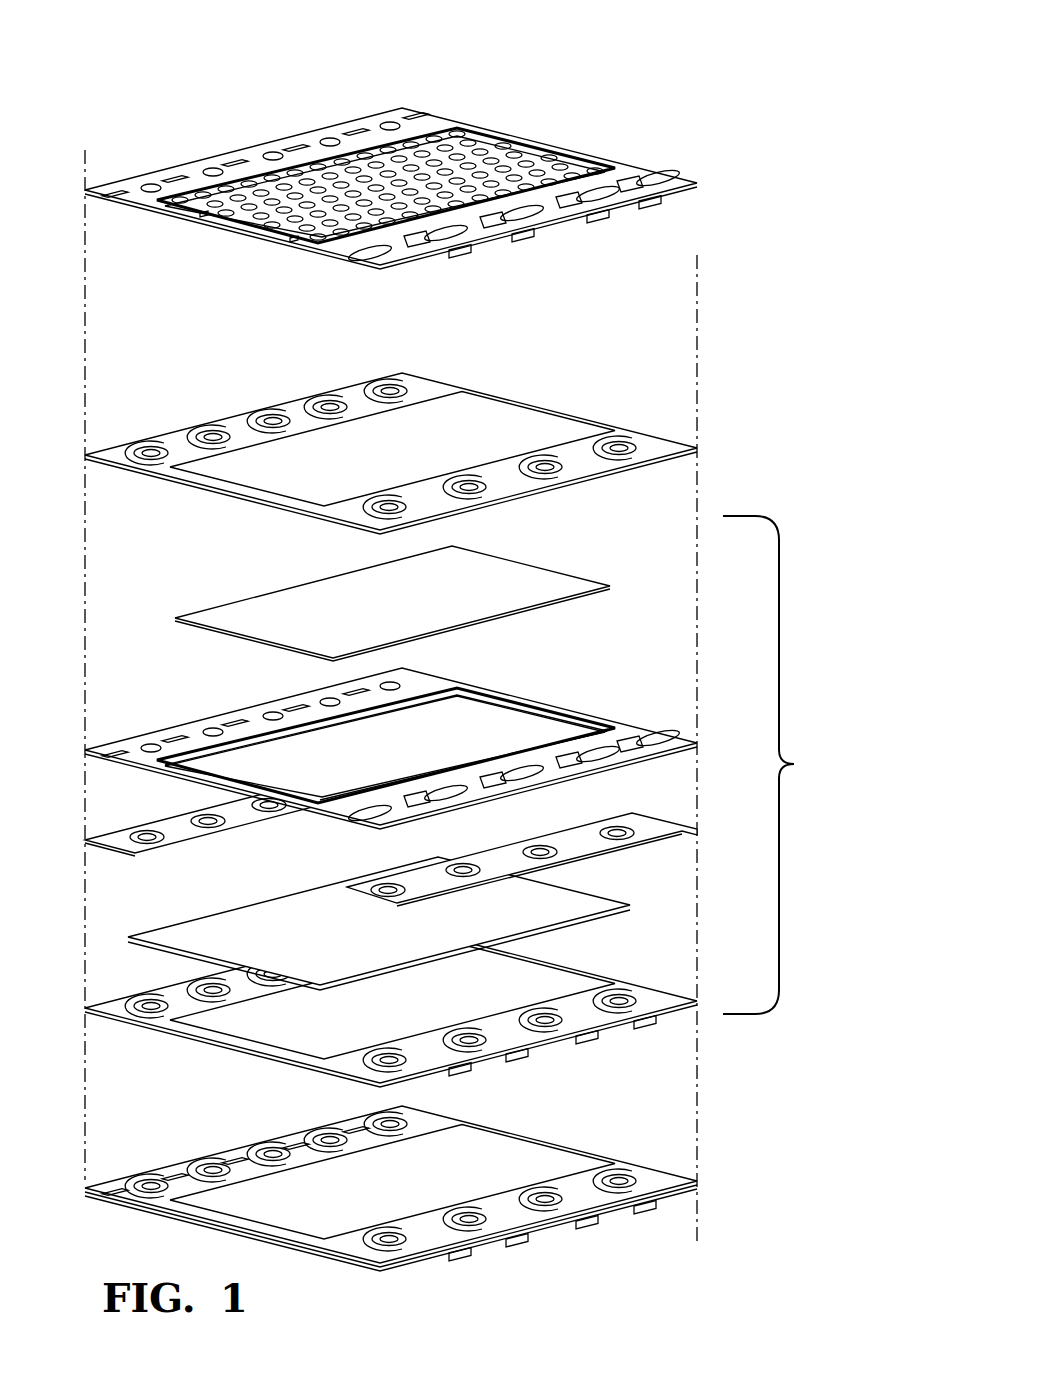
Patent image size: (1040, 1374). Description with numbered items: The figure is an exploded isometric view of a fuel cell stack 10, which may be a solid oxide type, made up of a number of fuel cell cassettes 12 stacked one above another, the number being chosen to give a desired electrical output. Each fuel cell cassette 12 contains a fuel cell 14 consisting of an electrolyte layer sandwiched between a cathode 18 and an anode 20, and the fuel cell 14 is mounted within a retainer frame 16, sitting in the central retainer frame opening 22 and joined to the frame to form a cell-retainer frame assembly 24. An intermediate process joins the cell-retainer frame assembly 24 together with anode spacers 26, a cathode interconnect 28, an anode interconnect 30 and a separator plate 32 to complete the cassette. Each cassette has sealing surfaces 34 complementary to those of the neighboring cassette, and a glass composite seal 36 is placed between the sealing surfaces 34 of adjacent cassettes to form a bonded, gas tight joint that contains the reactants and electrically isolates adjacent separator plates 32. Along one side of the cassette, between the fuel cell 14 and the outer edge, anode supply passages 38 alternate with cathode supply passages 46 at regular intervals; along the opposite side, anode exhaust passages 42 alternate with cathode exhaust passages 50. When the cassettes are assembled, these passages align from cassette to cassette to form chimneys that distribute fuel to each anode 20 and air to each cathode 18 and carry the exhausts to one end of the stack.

The fuel cell stack 10 is at (808, 134).
The fuel cell cassette 12 is at (683, 167).
The fuel cell 14 is at (488, 732).
The retainer frame 16 is at (255, 712).
The cathode 18 is at (540, 720).
The anode 20 is at (520, 794).
The central retainer frame opening 22 is at (440, 698).
The cell-retainer frame assembly 24 is at (658, 716).
The anode spacers 26 is at (168, 811).
The cathode interconnect 28 is at (555, 585).
The anode interconnect 30 is at (210, 920).
The separator plate 32 is at (195, 1045).
The sealing surfaces 34 is at (440, 115).
The glass composite seal 36 is at (643, 173).
The anode supply passages 38 is at (151, 183).
The anode exhaust passages 42 is at (640, 182).
The cathode supply passages 46 is at (115, 191).
The cathode exhaust passages 50 is at (677, 178).